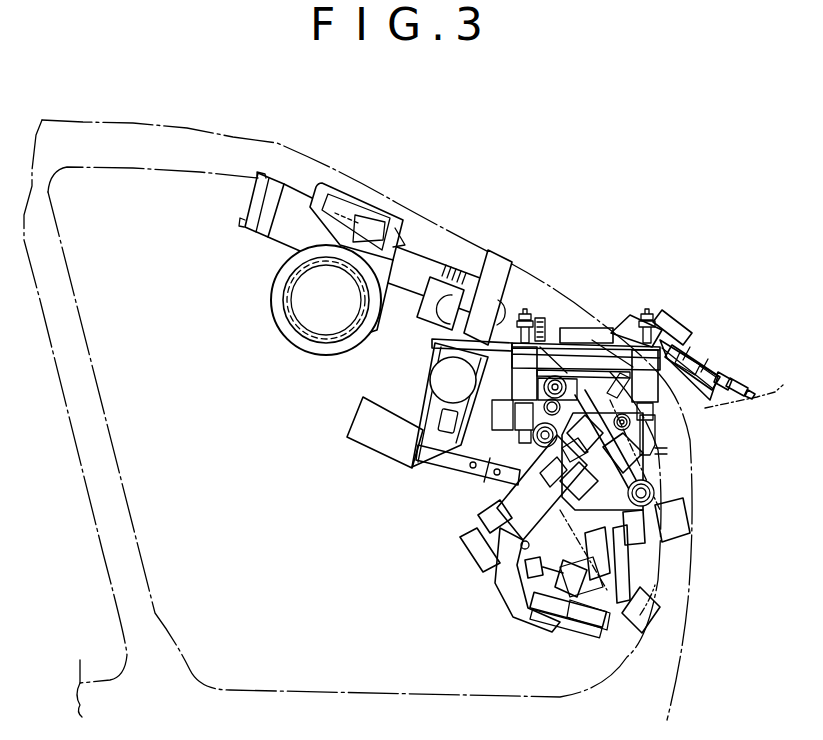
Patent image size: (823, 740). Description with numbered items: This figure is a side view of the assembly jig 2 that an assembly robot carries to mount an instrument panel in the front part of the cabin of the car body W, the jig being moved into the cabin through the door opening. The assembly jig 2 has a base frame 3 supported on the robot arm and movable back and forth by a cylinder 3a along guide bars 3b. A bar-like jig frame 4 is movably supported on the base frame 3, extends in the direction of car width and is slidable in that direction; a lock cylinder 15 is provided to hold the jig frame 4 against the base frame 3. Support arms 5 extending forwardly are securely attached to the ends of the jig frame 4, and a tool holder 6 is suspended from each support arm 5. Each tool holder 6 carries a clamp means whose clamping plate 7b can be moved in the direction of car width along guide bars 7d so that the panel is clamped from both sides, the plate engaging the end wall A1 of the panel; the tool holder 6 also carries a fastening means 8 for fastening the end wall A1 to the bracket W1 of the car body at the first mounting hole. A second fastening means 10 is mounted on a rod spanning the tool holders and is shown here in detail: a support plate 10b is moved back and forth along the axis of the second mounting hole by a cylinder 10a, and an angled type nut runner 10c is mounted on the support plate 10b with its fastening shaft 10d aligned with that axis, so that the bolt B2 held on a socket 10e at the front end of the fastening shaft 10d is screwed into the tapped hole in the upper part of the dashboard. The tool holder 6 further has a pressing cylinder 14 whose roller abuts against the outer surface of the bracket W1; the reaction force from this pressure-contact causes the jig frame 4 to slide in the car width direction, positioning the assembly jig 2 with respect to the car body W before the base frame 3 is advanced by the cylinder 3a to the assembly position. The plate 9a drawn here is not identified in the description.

The car body W is at (300, 152).
The bracket W1 is at (663, 580).
The end wall A1 is at (650, 618).
The bolt B2 is at (750, 396).
The assembly jig 2 is at (627, 304).
The base frame 3 is at (432, 317).
The cylinder 3a is at (280, 228).
The guide bar 3b is at (427, 262).
The jig frame 4 is at (433, 377).
The support arm 5 is at (307, 320).
The tool holder 6 is at (650, 432).
The clamping plate 7b is at (662, 556).
The guide bar 7d is at (500, 468).
The fastening means 8 is at (487, 514).
The mounting plate 9a is at (582, 362).
The second fastening means 10 is at (718, 359).
The cylinder 10a is at (630, 328).
The support plate 10b is at (697, 350).
The angled type nut runner 10c is at (677, 328).
The fastening shaft 10d is at (718, 388).
The socket 10e is at (735, 385).
The pressing cylinder 14 is at (655, 460).
The lock cylinder 15 is at (497, 250).